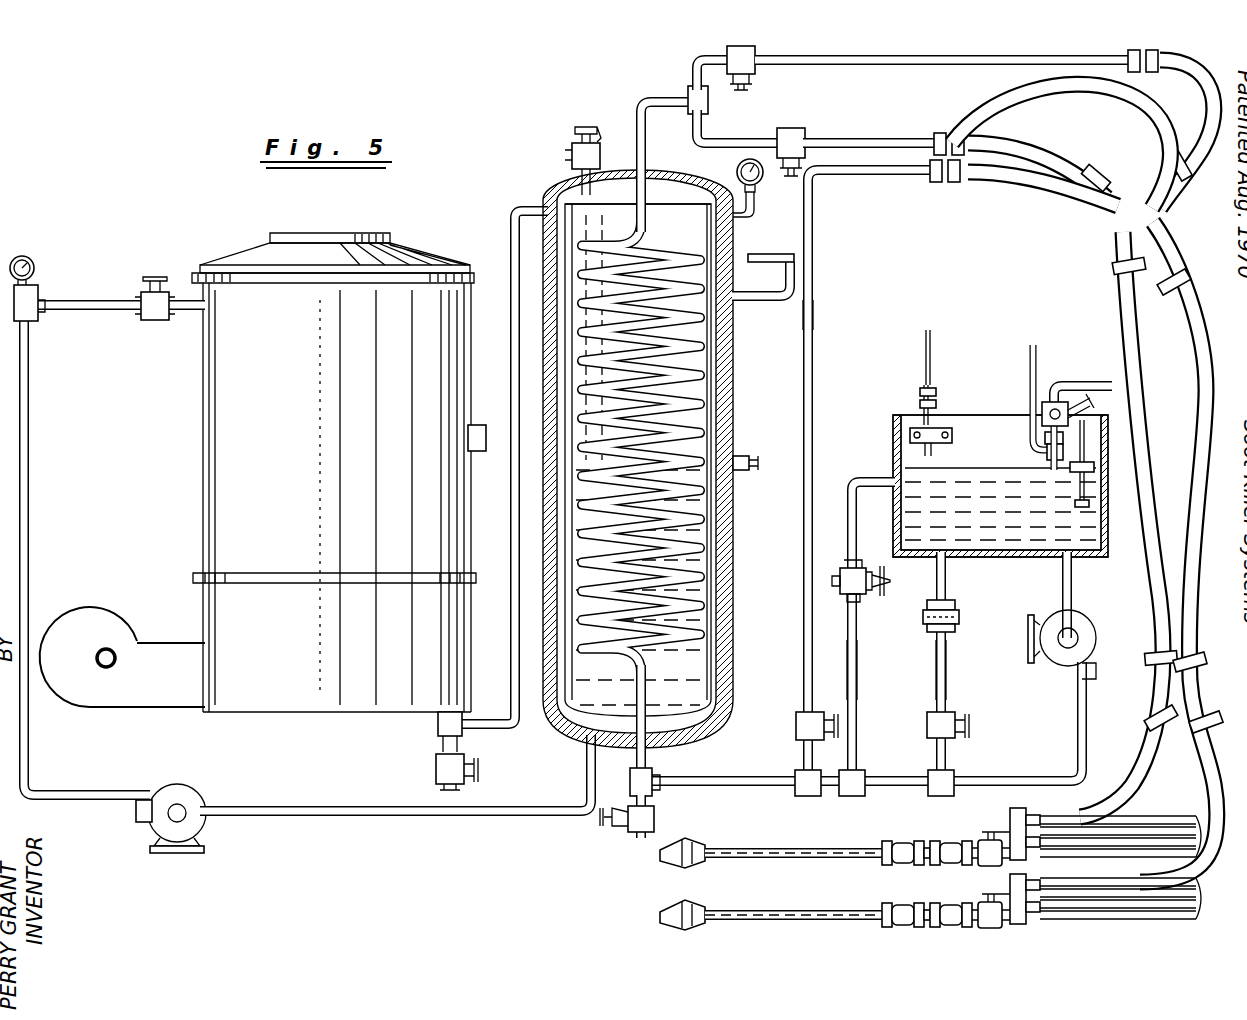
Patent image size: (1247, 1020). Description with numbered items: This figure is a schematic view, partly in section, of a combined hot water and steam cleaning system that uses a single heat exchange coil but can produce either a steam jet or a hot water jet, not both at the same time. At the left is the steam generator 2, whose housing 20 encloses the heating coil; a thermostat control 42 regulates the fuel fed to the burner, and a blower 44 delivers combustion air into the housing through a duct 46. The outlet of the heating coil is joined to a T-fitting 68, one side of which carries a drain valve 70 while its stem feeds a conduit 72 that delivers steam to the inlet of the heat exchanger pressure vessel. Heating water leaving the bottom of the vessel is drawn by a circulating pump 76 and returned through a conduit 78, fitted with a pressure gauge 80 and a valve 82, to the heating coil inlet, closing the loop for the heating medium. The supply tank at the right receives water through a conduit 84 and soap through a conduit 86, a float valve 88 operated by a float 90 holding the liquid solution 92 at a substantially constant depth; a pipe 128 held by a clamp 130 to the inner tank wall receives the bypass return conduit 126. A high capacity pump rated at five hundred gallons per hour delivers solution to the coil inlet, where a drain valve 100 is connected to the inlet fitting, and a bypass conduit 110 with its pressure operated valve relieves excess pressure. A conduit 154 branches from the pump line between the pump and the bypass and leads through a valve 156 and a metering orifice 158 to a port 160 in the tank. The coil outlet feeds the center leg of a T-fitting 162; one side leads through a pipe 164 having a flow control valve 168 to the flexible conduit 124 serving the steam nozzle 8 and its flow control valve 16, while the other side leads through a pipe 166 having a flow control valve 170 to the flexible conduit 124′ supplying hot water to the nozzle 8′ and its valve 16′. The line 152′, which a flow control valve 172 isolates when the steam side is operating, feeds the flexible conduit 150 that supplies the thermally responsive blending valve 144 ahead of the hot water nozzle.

The steam generator 2 is at (418, 236).
The housing 20 is at (470, 292).
The thermostat control 42 is at (478, 432).
The blower 44 is at (102, 608).
The duct 46 is at (142, 706).
The circulating pump 76 is at (186, 790).
The conduit 78 is at (58, 310).
The pressure gauge 80 is at (36, 270).
The valve 82 is at (150, 318).
The T-fitting 68 is at (438, 724).
The drain valve 70 is at (440, 766).
The conduit 72 is at (496, 730).
The drain valve 100 is at (654, 818).
The T-fitting 162 is at (708, 104).
The flow control valve 168 is at (755, 68).
The pipe 164 is at (884, 62).
The flow control valve 170 is at (796, 128).
The pipe 166 is at (912, 136).
The flexible conduit 124′ is at (1028, 146).
The flexible conduit 150 is at (998, 178).
The line 152′ is at (814, 368).
The flow control valve 172 is at (800, 714).
The liquid solution 92 is at (990, 478).
The pipe 128 is at (922, 418).
The clamp 130 is at (946, 440).
The conduit 86 is at (1033, 316).
The float valve 88 is at (1045, 438).
The conduit 84 is at (1112, 372).
The float 90 is at (1072, 475).
The port 160 is at (948, 570).
The metering orifice 158 is at (960, 616).
The conduit 154 is at (948, 676).
The valve 156 is at (958, 712).
The flexible conduit 124 is at (1190, 290).
The bypass return conduit 126 is at (1188, 362).
The nozzle 8′ is at (805, 842).
The gun valve 16′ is at (975, 838).
The thermally responsive blending valve 144 is at (1018, 810).
The nozzle assembly 8 is at (795, 912).
The flow control valve 16 is at (975, 900).
The bypass conduit 110 is at (1024, 866).